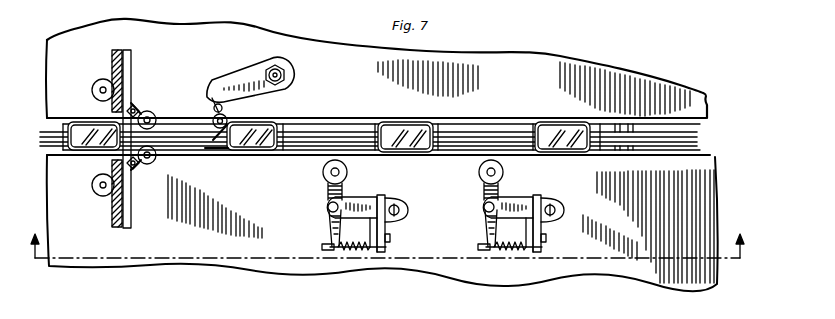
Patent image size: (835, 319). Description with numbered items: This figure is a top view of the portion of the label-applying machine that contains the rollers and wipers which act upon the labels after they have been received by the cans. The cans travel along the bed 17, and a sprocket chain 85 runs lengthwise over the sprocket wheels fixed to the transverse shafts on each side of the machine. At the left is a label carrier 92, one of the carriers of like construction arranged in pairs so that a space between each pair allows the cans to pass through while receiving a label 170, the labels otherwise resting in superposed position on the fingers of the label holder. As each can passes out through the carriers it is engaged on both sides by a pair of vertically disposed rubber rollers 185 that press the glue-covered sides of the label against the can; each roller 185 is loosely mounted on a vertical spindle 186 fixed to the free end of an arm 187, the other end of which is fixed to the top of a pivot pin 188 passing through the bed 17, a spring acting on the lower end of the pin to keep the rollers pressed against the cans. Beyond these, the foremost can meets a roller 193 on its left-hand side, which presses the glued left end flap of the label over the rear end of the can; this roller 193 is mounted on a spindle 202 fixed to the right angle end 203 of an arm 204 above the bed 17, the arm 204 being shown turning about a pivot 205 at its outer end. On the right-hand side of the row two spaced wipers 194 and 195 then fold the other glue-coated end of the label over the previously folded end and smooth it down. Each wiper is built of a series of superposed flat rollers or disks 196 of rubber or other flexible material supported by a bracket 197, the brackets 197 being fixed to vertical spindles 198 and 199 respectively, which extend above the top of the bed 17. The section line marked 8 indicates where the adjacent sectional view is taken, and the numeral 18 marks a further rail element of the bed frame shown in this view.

The section line 8- 8 is at (390, 259).
The bed 17 is at (660, 78).
The rail block 18 is at (88, 125).
The sprocket chain 85 is at (498, 131).
The label carrier 92 is at (124, 229).
The label 170 is at (131, 95).
The roller 185 is at (149, 112).
The vertical spindle 186 is at (152, 115).
The arm 187 is at (134, 104).
The pivot pin 188 is at (100, 183).
The roller 193 is at (229, 113).
The wiper 194 is at (326, 190).
The wiper 195 is at (483, 190).
The flat rollers or disks 196 is at (323, 170).
The bracket 197 is at (365, 200).
The vertical spindle 198 is at (409, 208).
The vertical spindle 199 is at (566, 208).
The spindle 202 is at (213, 118).
The right angle end 203 is at (211, 88).
The arm 204 is at (246, 75).
The pivot 205 is at (284, 71).